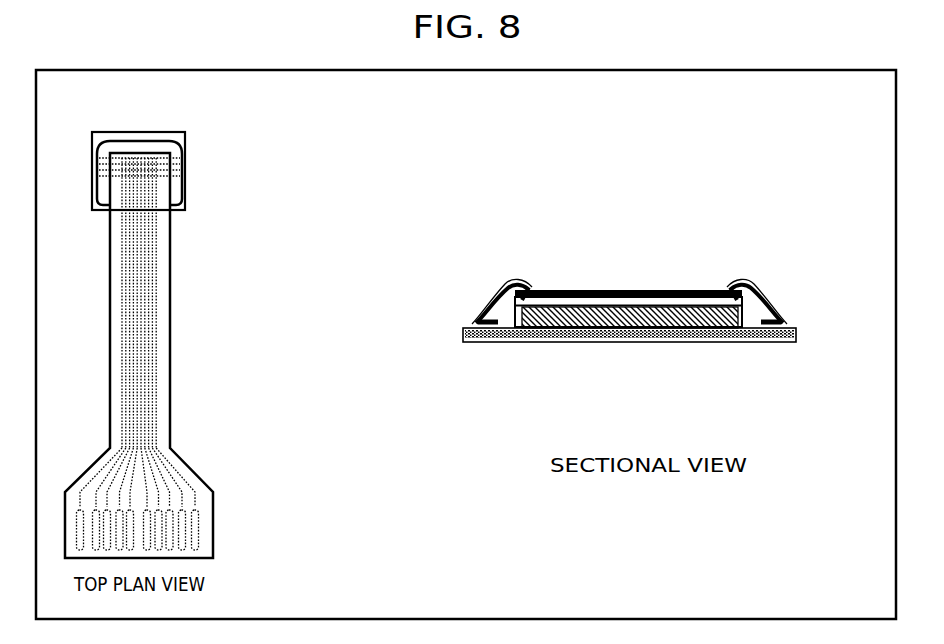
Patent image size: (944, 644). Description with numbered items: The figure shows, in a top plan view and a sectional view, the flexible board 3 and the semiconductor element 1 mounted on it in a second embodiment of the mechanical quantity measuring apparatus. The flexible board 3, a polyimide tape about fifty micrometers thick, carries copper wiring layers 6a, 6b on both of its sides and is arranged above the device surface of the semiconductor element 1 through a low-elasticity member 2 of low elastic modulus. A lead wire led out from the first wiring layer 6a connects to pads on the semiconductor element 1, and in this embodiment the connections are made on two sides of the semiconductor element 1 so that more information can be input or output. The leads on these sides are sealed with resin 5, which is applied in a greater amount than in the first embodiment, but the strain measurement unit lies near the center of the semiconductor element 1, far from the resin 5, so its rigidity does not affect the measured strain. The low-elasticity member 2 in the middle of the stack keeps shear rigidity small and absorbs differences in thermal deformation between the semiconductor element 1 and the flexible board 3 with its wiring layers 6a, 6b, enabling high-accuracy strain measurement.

The semiconductor element 1 is at (181, 139).
The low-elasticity member 2 is at (667, 342).
The flexible board 3 is at (190, 463).
The resin 5 is at (173, 193).
The first wiring layer 6a is at (555, 342).
The wiring layer 6b is at (567, 289).